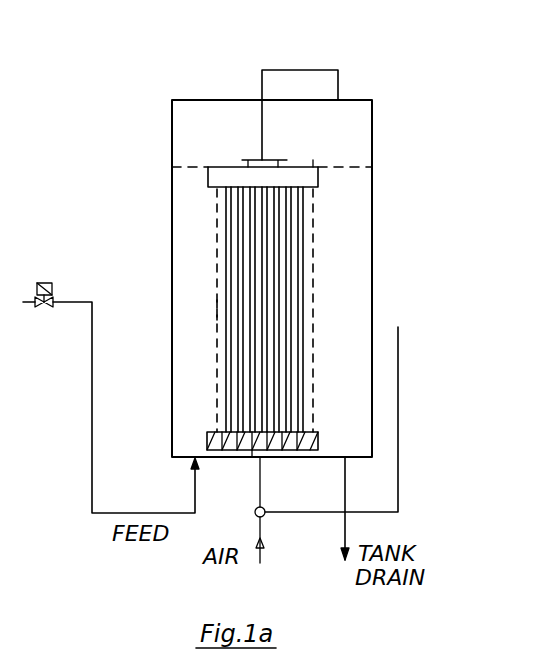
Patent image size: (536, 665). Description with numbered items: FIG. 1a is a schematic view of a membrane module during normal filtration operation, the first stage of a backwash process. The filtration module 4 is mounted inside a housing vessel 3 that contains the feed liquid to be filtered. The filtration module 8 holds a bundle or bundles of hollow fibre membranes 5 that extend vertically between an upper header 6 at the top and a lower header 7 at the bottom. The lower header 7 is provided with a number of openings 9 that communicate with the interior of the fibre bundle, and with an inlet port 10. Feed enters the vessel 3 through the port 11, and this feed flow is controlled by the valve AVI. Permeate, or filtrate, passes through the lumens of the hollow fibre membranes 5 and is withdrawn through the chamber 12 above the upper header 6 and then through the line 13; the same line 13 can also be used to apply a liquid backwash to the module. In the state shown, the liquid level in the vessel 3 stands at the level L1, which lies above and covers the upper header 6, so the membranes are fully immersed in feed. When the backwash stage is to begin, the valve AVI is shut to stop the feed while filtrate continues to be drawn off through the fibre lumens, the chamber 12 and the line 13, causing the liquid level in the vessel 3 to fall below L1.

The housing vessel 3 is at (170, 184).
The filtration module 4 is at (325, 367).
The hollow fibre membranes 5 is at (222, 350).
The upper header 6 is at (312, 165).
The lower header 7 is at (318, 438).
The filtration module 8 is at (214, 402).
The openings 9 is at (238, 453).
The inlet port 10 is at (268, 456).
The feed port 11 is at (190, 466).
The chamber 12 is at (268, 165).
The line 13 is at (285, 70).
The liquid level L1 is at (376, 164).
The valve AVI is at (52, 280).